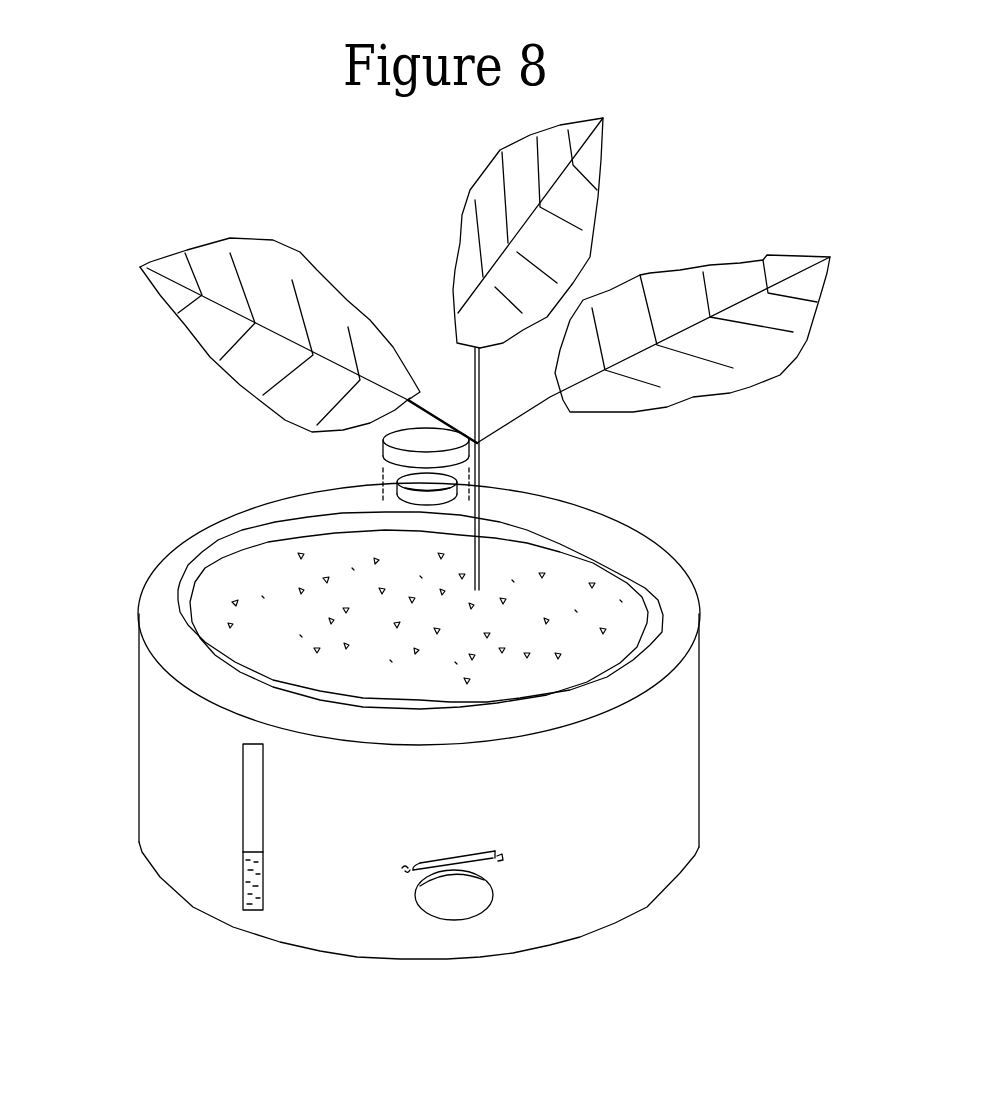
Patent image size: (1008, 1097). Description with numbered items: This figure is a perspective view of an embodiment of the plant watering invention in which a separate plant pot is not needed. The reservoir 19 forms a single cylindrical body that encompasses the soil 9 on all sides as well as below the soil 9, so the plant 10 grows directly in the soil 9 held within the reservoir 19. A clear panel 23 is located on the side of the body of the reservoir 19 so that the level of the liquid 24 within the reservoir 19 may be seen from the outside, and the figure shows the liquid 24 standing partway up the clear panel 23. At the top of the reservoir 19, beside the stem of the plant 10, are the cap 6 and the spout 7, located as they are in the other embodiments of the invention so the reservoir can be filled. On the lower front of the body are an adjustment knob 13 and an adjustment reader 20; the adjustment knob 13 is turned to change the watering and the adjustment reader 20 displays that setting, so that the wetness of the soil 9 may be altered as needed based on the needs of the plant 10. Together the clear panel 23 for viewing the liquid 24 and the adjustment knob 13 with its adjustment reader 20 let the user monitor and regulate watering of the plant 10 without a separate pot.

The cap 6 is at (381, 448).
The spout 7 is at (481, 480).
The soil 9 is at (545, 610).
The plant 10 is at (665, 266).
The adjustment knob 13 is at (453, 908).
The reservoir 19 is at (708, 710).
The adjustment reader 20 is at (495, 855).
The clear panel 23 is at (250, 842).
The liquid 24 is at (243, 887).